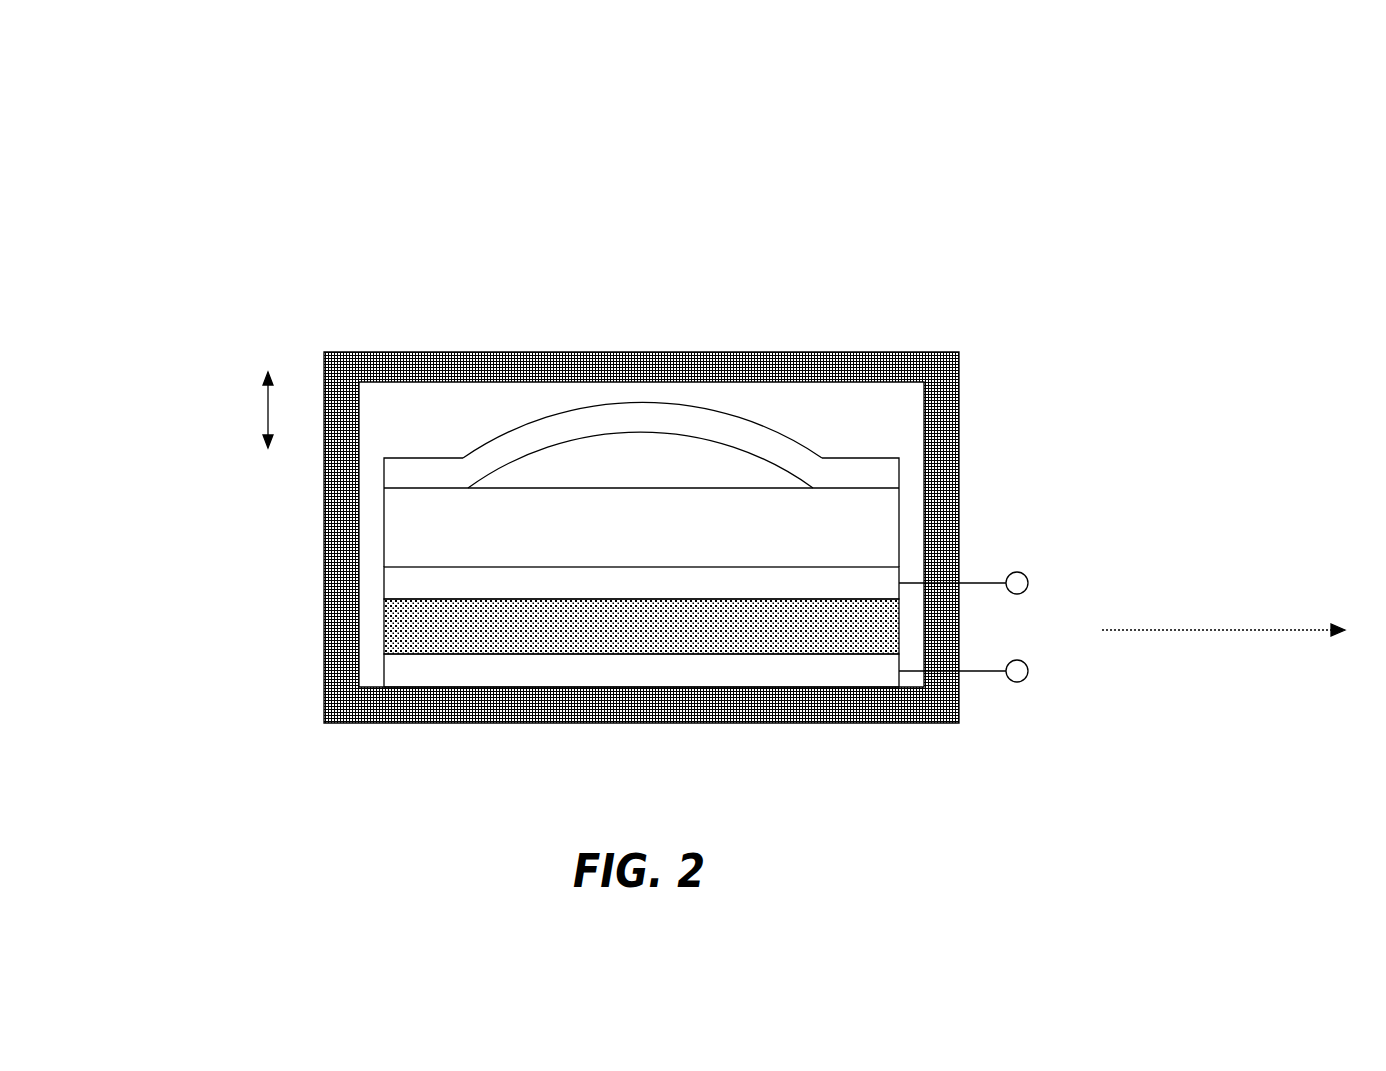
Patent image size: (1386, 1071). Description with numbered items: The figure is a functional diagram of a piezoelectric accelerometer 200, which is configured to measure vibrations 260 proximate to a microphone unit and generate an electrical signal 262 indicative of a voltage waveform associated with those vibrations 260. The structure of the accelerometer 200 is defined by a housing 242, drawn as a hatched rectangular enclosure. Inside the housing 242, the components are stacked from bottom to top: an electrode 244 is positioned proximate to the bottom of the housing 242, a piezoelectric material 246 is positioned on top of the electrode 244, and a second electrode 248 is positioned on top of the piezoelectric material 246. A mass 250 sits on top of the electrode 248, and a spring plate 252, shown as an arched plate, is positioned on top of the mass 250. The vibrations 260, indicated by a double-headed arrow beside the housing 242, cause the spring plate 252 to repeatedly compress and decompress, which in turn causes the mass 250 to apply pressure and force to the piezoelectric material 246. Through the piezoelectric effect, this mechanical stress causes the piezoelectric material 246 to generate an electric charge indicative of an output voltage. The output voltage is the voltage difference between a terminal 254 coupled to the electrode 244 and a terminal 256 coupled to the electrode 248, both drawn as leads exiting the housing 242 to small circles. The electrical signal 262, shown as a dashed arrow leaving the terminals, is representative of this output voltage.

The accelerometer 200 is at (393, 160).
The housing 242 is at (960, 372).
The electrode 244 is at (384, 673).
The piezoelectric material 246 is at (384, 628).
The electrode 248 is at (384, 583).
The mass 250 is at (384, 513).
The spring plate 252 is at (795, 436).
The terminal 254 is at (1017, 683).
The terminal 256 is at (1017, 572).
The vibrations 260 is at (268, 418).
The electrical signal 262 is at (1168, 630).